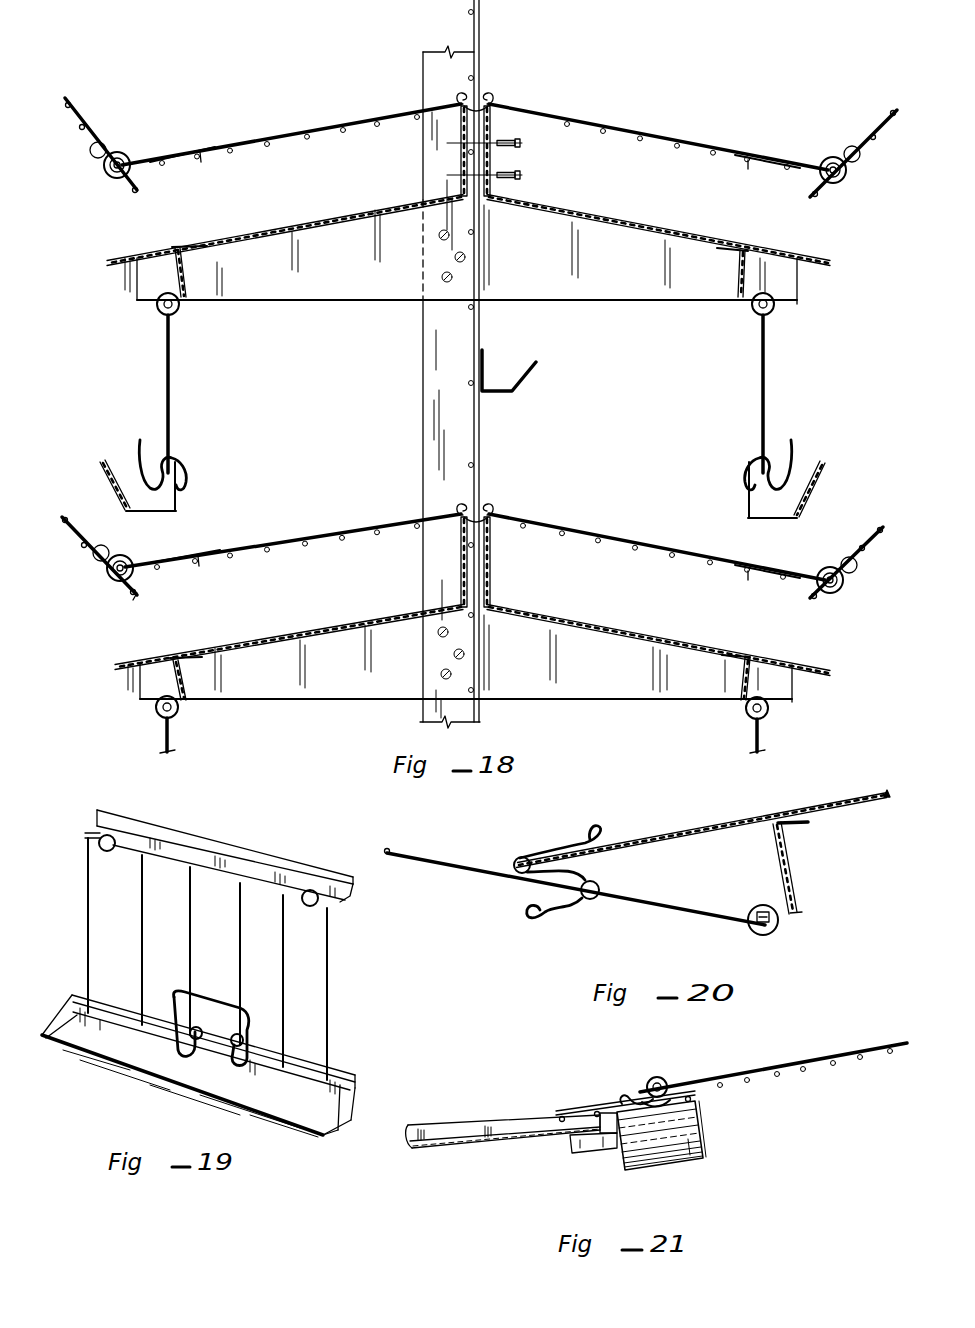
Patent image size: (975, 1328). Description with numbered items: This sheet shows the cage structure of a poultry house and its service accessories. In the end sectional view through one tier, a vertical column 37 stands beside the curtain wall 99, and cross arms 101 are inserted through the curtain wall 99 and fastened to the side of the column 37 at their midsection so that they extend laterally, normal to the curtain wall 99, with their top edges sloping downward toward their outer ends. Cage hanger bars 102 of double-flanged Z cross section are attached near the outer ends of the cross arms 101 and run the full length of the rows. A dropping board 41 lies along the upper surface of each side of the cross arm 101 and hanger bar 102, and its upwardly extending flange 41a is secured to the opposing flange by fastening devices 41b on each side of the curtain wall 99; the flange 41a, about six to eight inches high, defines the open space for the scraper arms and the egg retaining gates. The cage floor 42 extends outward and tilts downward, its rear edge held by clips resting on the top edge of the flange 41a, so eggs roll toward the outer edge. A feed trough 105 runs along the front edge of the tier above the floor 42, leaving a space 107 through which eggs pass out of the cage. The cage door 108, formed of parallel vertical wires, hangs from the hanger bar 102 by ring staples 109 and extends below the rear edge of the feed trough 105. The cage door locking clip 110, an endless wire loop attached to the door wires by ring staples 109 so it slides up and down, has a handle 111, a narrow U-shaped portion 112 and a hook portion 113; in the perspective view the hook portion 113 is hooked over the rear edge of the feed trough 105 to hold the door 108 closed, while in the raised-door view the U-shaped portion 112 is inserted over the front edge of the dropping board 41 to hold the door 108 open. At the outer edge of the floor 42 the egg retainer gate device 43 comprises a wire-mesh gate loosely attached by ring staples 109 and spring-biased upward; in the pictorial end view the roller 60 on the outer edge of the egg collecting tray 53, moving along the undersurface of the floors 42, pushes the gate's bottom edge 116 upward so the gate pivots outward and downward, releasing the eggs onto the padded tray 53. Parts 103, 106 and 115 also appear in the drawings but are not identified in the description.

In FIG. 18, the vertical column 37 is at (426, 62).
In FIG. 18, the curtain wall 99 is at (480, 33).
In FIG. 18, the floor 42 is at (318, 125).
In FIG. 21, the floor 42 is at (834, 1052).
In FIG. 18, the egg retainer gate device 43 is at (96, 114).
In FIG. 21, the egg retainer gate device 43 is at (580, 1087).
In FIG. 18, the ring staples 109 is at (125, 152).
In FIG. 19, the ring staples 109 is at (97, 833).
In FIG. 20, the ring staples 109 is at (783, 920).
In FIG. 21, the ring staples 109 is at (648, 1080).
In FIG. 18, the bracket plate 115 is at (195, 142).
In FIG. 21, the bracket plate 115 is at (722, 1080).
In FIG. 18, the clip 103 is at (488, 97).
In FIG. 18, the dropping board 41 is at (278, 238).
In FIG. 20, the dropping board 41 is at (768, 814).
In FIG. 18, the upwardly extending flange 41a is at (462, 152).
In FIG. 18, the fastening devices 41b is at (522, 143).
In FIG. 18, the cross arms 101 is at (533, 282).
In FIG. 18, the cage hanger bars 102 is at (190, 280).
In FIG. 19, the cage hanger bars 102 is at (258, 850).
In FIG. 20, the cage hanger bars 102 is at (793, 863).
In FIG. 18, the cage door 108 is at (228, 390).
In FIG. 19, the cage door 108 is at (328, 1002).
In FIG. 20, the cage door 108 is at (662, 907).
In FIG. 18, the feed trough 105 is at (103, 462).
In FIG. 19, the feed trough 105 is at (355, 1092).
In FIG. 18, the cage door locking clip 110 is at (184, 463).
In FIG. 19, the cage door locking clip 110 is at (222, 1012).
In FIG. 20, the cage door locking clip 110 is at (545, 925).
In FIG. 18, the bracket 106 is at (527, 378).
In FIG. 18, the space 107 is at (167, 534).
In FIG. 18, the bottom edge 116 is at (135, 593).
In FIG. 20, the handle 111 is at (590, 836).
In FIG. 20, the narrow U-shaped portion 112 is at (508, 858).
In FIG. 20, the hook portion 113 is at (582, 868).
In FIG. 21, the egg collecting trays 53 is at (513, 1132).
In FIG. 21, the roller devices 60 is at (707, 1162).